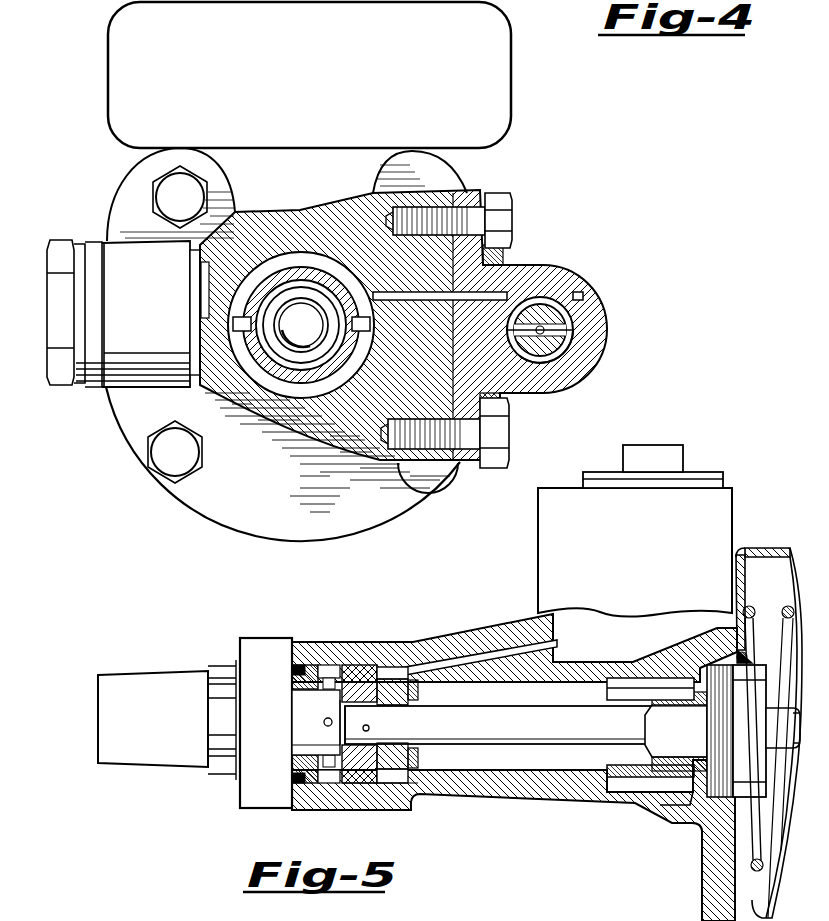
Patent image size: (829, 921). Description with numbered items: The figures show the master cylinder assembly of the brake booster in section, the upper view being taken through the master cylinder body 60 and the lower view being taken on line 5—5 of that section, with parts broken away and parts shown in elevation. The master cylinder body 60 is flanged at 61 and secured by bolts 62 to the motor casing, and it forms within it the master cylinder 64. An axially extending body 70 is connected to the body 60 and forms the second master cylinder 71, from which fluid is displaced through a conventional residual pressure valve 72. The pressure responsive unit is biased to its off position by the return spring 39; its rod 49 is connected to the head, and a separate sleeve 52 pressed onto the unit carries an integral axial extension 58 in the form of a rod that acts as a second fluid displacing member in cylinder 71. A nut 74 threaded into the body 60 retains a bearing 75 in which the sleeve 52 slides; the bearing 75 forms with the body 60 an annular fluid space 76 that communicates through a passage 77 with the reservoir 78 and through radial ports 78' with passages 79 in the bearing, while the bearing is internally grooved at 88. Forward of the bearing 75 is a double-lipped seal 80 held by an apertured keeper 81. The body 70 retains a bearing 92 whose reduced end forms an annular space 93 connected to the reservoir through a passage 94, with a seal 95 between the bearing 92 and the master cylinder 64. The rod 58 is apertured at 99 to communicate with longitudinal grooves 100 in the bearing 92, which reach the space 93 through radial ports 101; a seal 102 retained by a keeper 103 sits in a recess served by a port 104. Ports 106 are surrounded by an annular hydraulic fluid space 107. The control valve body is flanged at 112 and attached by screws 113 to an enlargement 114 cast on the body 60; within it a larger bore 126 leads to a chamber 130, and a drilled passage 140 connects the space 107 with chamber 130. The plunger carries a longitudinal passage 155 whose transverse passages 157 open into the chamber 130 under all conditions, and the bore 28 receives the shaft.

In FIG. 4, the section line 5- 5 is at (306, 68).
In FIG. 4, the shaft bore 28 is at (301, 325).
In FIG. 5, the return spring 39 is at (792, 607).
In FIG. 5, the rod 49 is at (795, 728).
In FIG. 5, the sleeve 52 is at (770, 731).
In FIG. 4, the axial extension 58 is at (300, 290).
In FIG. 5, the axial extension 58 is at (540, 731).
In FIG. 4, the master cylinder body 60 is at (265, 225).
In FIG. 4, the flange 61 is at (137, 194).
In FIG. 4, the bolt 62 is at (165, 207).
In FIG. 5, the master cylinder 64 is at (528, 778).
In FIG. 5, the axially extending body 70 is at (148, 675).
In FIG. 5, the second master cylinder 71 is at (293, 727).
In FIG. 4, the residual pressure valve 72 is at (165, 390).
In FIG. 5, the nut 74 is at (760, 666).
In FIG. 5, the bearing 75 is at (720, 700).
In FIG. 5, the annular fluid space 76 is at (690, 826).
In FIG. 5, the passage 77 is at (712, 650).
In FIG. 4, the reservoir 78 is at (322, 75).
In FIG. 5, the reservoir 78 is at (650, 531).
In FIG. 5, the radial ports 78' is at (666, 810).
In FIG. 5, the passages 79 is at (700, 700).
In FIG. 5, the double-lipped seal 80 is at (692, 666).
In FIG. 5, the keeper 81 is at (646, 690).
In FIG. 5, the internal grooves 88 is at (676, 731).
In FIG. 5, the bearing 92 is at (360, 665).
In FIG. 5, the annular space 93 is at (390, 667).
In FIG. 5, the passage 94 is at (478, 645).
In FIG. 5, the seal 95 is at (420, 747).
In FIG. 5, the aperture 99 is at (370, 728).
In FIG. 5, the longitudinal grooves 100 is at (376, 717).
In FIG. 5, the radial ports 101 is at (384, 705).
In FIG. 5, the seal 102 is at (325, 730).
In FIG. 4, the keeper 103 is at (285, 374).
In FIG. 5, the keeper 103 is at (350, 745).
In FIG. 5, the port 104 is at (372, 785).
In FIG. 4, the ports 106 is at (240, 325).
In FIG. 5, the ports 106 is at (328, 716).
In FIG. 4, the annular hydraulic fluid space 107 is at (212, 287).
In FIG. 5, the annular hydraulic fluid space 107 is at (327, 665).
In FIG. 4, the flange 112 is at (478, 193).
In FIG. 4, the screws 113 is at (510, 217).
In FIG. 4, the enlargement 114 is at (352, 462).
In FIG. 4, the bore 126 is at (580, 338).
In FIG. 4, the chamber 130 is at (570, 355).
In FIG. 4, the passage 140 is at (506, 292).
In FIG. 4, the longitudinal passage 155 is at (548, 310).
In FIG. 4, the transverse passages 157 is at (570, 330).